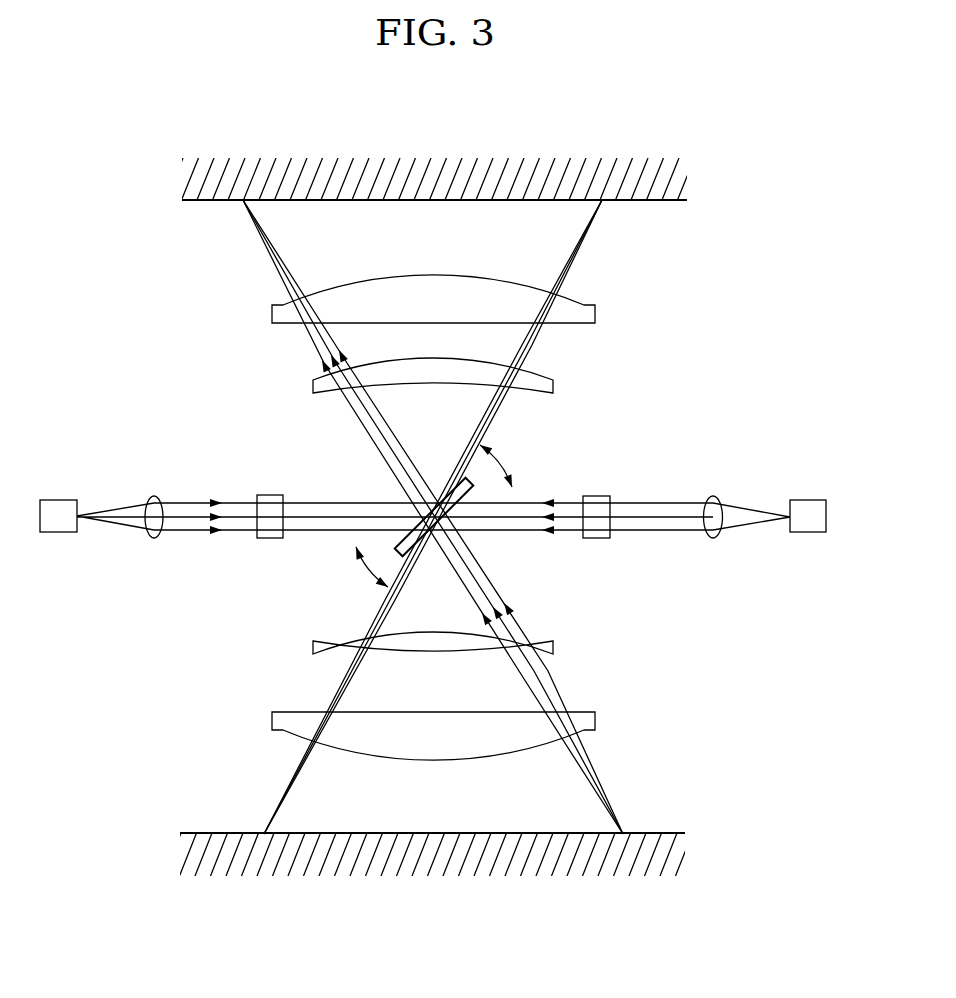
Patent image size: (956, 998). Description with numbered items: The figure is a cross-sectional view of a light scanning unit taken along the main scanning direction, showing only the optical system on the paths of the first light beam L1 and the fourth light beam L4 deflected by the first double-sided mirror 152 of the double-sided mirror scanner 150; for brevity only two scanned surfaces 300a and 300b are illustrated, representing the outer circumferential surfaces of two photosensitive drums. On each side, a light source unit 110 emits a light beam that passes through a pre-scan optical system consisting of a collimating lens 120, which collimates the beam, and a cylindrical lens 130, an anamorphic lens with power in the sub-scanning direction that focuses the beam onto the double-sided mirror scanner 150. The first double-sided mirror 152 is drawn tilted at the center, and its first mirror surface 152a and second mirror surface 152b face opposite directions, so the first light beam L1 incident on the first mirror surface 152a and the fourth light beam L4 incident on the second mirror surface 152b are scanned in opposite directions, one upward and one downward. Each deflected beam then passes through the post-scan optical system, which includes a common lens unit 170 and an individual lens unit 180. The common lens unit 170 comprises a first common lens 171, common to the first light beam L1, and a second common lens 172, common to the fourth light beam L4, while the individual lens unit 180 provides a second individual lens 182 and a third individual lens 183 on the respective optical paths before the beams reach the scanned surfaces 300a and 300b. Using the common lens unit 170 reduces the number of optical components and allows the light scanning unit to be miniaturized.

The light source unit 110 is at (57, 532).
The collimating lens 120 is at (152, 538).
The cylindrical lens 130 is at (270, 538).
The double-sided mirror scanner 150 is at (548, 482).
The first double-sided mirror 152 is at (496, 490).
The first mirror surface 152a is at (490, 452).
The second mirror surface 152b is at (470, 492).
The common lens unit 170 is at (541, 476).
The first common lens 171 is at (553, 382).
The second common lens 172 is at (552, 647).
The individual lens unit 180 is at (536, 506).
The second individual lens 182 is at (598, 309).
The third individual lens 183 is at (595, 722).
The scanned surface 300a is at (658, 200).
The scanned surface 300b is at (665, 833).
The first light beam L1 is at (125, 505).
The fourth light beam L4 is at (657, 503).